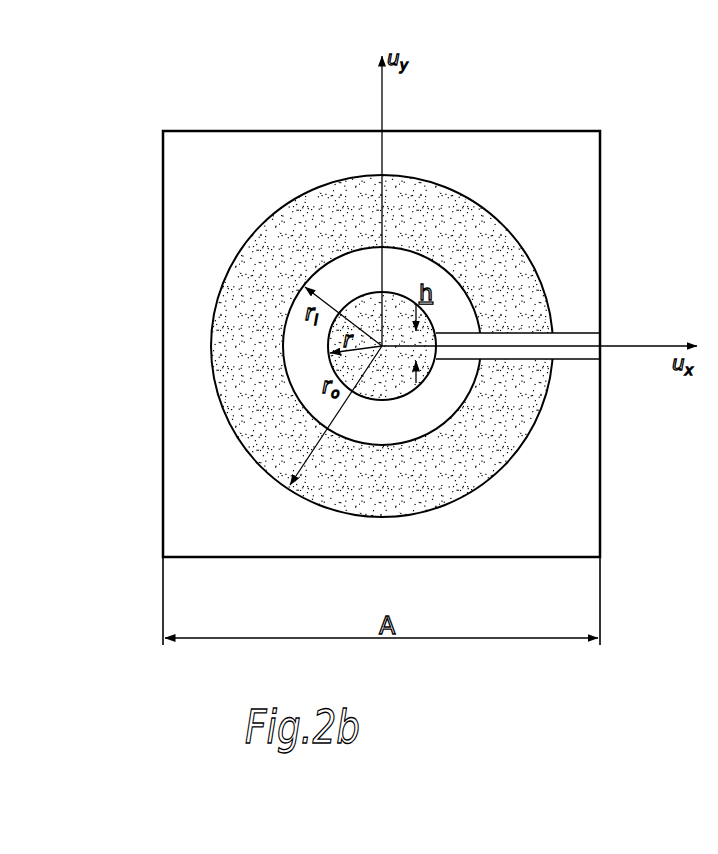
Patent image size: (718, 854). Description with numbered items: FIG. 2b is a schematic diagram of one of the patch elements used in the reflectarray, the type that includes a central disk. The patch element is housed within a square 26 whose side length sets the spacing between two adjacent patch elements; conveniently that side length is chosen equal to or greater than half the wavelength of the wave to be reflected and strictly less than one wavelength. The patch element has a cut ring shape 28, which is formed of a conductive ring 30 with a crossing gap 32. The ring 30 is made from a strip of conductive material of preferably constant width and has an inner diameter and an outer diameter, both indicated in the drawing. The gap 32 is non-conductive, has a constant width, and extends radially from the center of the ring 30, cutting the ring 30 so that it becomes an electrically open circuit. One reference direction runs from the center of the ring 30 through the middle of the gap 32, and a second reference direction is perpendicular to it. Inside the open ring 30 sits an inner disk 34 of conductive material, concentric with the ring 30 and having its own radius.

The square 26 is at (574, 130).
The cut ring shape 28 is at (521, 236).
The conductive ring 30 is at (465, 237).
The crossing gap 32 is at (542, 340).
The inner disk 34 is at (397, 382).